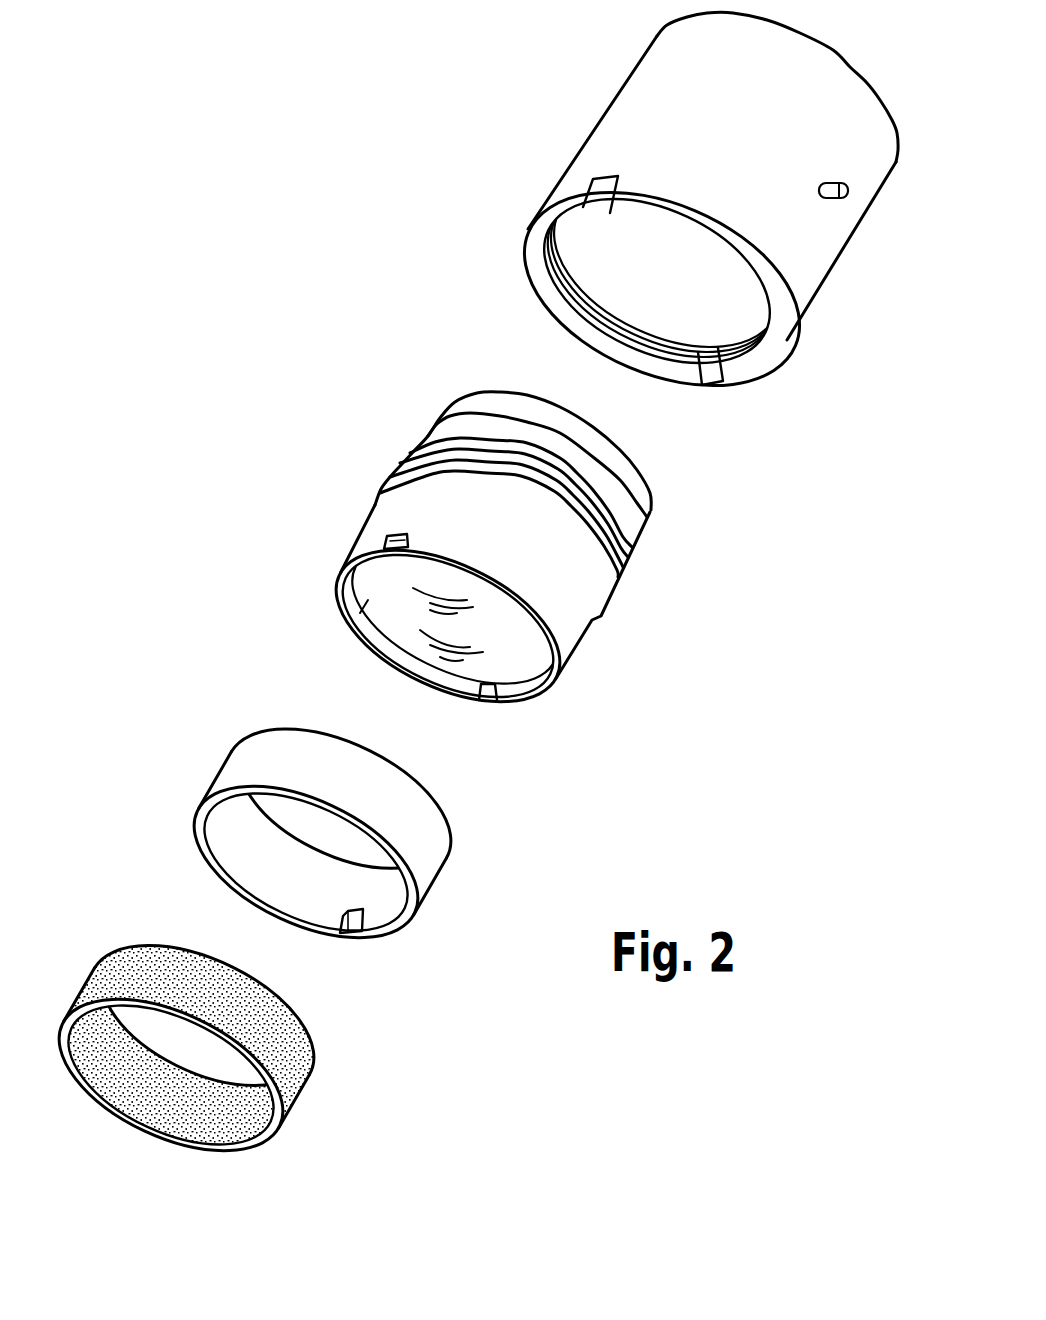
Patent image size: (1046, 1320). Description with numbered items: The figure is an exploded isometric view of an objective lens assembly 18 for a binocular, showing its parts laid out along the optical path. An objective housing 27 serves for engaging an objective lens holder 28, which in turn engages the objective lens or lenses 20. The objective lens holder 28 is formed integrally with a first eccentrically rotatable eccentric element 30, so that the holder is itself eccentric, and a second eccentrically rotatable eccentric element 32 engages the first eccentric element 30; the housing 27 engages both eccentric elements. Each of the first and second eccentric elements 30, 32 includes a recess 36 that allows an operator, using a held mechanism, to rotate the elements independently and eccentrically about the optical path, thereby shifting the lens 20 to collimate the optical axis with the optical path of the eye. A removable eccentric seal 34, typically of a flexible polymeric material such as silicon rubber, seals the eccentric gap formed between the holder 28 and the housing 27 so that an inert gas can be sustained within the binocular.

The objective lens assembly 18 is at (362, 268).
The objective lens 20 is at (431, 585).
The objective housing 27 is at (813, 262).
The objective lens holder 28 is at (364, 528).
The first eccentrically rotatable eccentric element 30 is at (540, 686).
The second eccentrically rotatable eccentric element 32 is at (403, 910).
The eccentric seal 34 is at (293, 1077).
The recess 36 is at (394, 557).